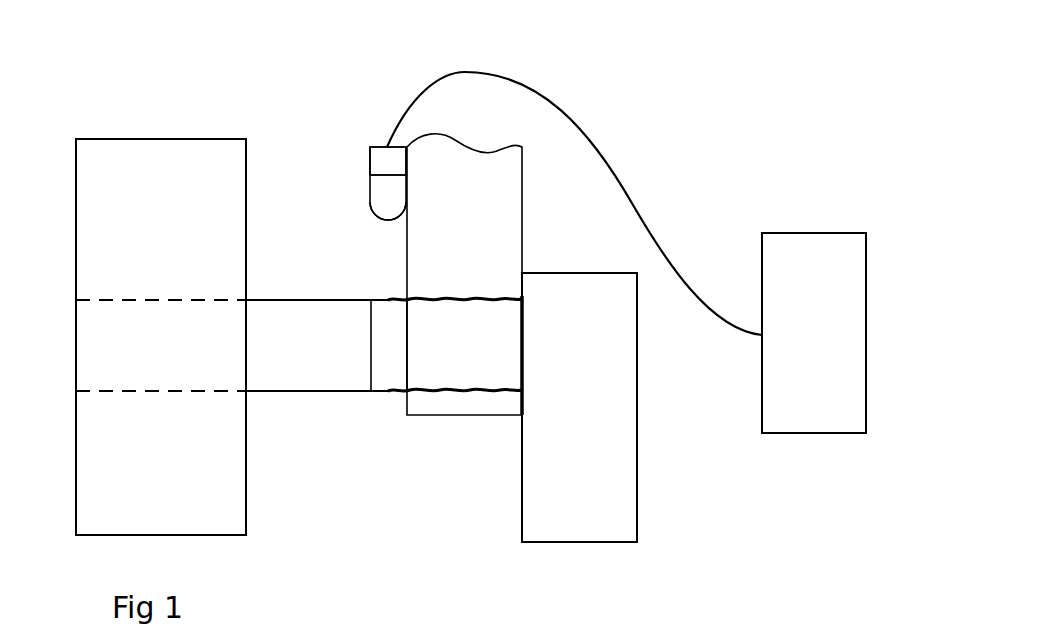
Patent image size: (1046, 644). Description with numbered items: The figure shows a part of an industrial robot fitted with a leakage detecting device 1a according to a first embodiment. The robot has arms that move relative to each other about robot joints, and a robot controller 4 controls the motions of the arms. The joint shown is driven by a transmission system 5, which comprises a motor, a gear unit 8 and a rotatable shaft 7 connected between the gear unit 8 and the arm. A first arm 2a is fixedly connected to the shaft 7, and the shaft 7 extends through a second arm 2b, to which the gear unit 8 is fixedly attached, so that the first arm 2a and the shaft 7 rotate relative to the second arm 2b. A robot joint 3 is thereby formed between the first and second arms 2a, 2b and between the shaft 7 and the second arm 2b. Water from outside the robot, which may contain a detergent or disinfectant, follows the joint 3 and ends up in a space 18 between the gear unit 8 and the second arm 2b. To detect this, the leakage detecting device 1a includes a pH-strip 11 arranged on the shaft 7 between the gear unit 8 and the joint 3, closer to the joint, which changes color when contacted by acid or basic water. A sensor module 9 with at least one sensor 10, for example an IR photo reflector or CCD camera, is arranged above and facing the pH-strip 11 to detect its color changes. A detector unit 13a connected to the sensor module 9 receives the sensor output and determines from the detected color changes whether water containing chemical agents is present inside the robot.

The leakage detecting device 1a is at (377, 130).
The first arm 2a is at (637, 461).
The second arm 2b is at (521, 248).
The robot joint 3 is at (478, 298).
The robot controller 4 is at (867, 293).
The transmission system 5 is at (280, 392).
The rotatable shaft 7 is at (335, 392).
The gear unit 8 is at (72, 166).
The sensor module 9 is at (363, 194).
The sensor 10 is at (388, 221).
The pH-strip 11 is at (390, 389).
The detector unit 13a is at (368, 158).
The space 18 is at (323, 250).